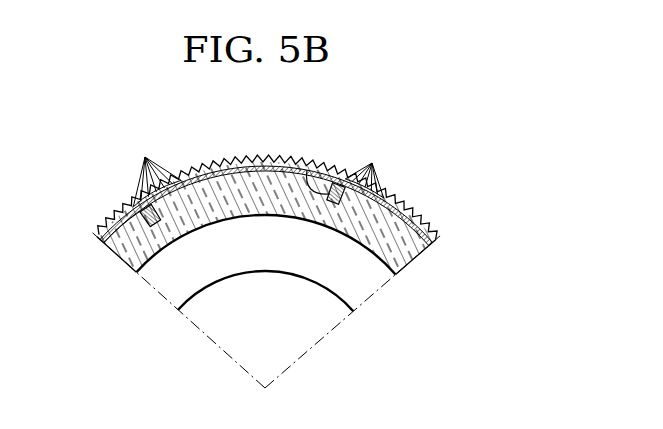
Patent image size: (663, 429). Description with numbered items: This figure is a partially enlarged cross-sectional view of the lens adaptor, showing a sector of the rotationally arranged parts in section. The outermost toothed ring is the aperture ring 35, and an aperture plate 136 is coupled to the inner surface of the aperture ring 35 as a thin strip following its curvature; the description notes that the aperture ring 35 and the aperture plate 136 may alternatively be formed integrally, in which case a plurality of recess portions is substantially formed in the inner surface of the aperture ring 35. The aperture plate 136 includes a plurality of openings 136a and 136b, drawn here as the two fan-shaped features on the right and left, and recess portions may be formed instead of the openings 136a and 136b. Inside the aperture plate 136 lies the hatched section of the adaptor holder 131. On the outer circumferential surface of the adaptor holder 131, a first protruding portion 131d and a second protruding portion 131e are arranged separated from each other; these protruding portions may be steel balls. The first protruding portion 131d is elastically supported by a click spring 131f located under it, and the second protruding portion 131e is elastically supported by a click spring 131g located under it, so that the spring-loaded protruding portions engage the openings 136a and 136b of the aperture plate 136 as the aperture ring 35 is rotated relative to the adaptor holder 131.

The adaptor holder 131 is at (418, 255).
The first protruding portion 131d is at (334, 183).
The second protruding portion 131e is at (136, 204).
The click spring 131f is at (306, 170).
The click spring 131g is at (142, 224).
The aperture plate 136 is at (240, 165).
The opening 136a is at (372, 163).
The opening 136b is at (145, 157).
The aperture ring 35 is at (205, 159).